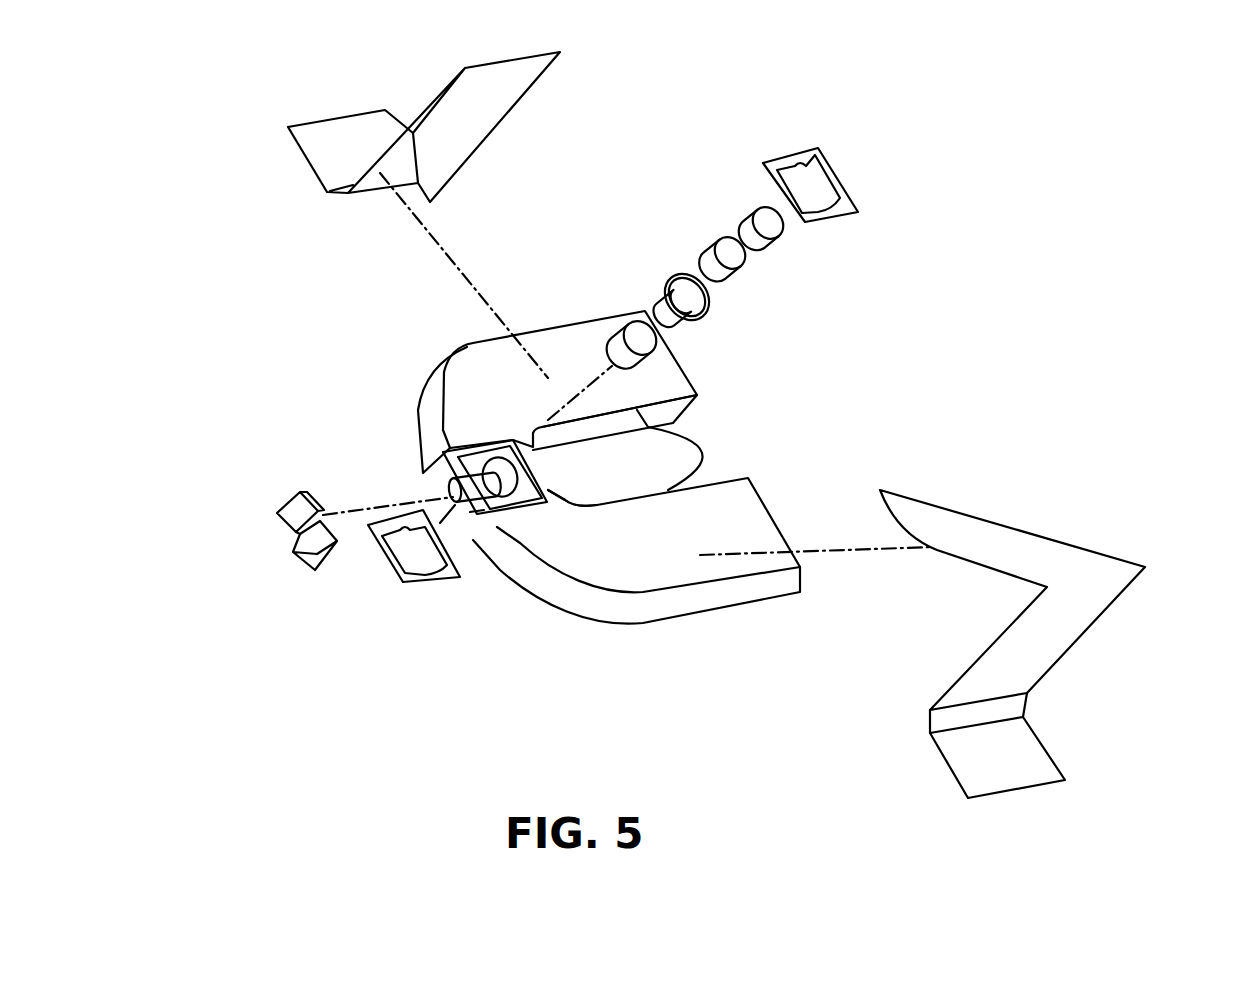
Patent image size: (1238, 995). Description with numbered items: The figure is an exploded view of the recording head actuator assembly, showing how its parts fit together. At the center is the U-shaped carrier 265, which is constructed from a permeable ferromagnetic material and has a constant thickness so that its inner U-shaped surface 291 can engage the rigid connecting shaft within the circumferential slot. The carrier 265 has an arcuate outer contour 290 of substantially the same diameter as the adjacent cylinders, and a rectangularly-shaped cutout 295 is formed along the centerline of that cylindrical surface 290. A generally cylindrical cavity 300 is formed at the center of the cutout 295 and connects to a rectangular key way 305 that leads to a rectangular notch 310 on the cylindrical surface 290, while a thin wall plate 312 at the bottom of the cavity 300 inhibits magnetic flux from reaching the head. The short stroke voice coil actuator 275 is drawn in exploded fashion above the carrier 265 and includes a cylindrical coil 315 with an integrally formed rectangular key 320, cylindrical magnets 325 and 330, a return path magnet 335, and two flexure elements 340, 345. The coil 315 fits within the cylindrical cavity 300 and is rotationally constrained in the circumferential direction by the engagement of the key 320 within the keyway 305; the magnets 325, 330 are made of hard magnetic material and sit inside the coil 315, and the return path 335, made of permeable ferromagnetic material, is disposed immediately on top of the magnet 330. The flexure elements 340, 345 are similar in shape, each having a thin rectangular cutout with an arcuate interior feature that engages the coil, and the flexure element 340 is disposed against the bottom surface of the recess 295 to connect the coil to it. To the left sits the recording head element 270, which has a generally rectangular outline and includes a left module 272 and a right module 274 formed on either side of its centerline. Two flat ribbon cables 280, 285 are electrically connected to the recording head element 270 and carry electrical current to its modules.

The U-shaped carrier 265 is at (488, 363).
The recording head element 270 is at (244, 580).
The left module 272 is at (282, 520).
The right module 274 is at (305, 567).
The short stroke voice coil actuator 275 is at (737, 261).
The ribbon cable 280 is at (1053, 633).
The ribbon cable 285 is at (313, 160).
The arcuate outer contour 290 is at (433, 407).
The inner U-shaped surface 291 is at (702, 453).
The rectangularly-shaped cutout 295 is at (553, 490).
The cylindrical cavity 300 is at (493, 517).
The rectangular key way 305 is at (477, 512).
The rectangular notch 310 is at (445, 480).
The thin wall plate 312 is at (445, 498).
The cylindrical coil 315 is at (700, 313).
The rectangular key 320 is at (683, 320).
The cylindrical magnet 325 is at (620, 330).
The cylindrical magnet 330 is at (737, 263).
The return path magnet 335 is at (782, 238).
The flexure element 340 is at (412, 575).
The flexure element 345 is at (830, 160).